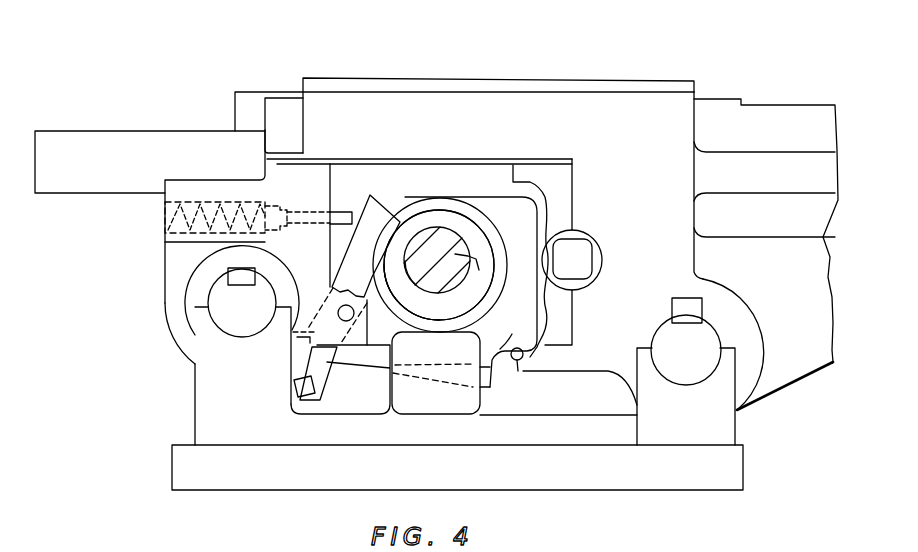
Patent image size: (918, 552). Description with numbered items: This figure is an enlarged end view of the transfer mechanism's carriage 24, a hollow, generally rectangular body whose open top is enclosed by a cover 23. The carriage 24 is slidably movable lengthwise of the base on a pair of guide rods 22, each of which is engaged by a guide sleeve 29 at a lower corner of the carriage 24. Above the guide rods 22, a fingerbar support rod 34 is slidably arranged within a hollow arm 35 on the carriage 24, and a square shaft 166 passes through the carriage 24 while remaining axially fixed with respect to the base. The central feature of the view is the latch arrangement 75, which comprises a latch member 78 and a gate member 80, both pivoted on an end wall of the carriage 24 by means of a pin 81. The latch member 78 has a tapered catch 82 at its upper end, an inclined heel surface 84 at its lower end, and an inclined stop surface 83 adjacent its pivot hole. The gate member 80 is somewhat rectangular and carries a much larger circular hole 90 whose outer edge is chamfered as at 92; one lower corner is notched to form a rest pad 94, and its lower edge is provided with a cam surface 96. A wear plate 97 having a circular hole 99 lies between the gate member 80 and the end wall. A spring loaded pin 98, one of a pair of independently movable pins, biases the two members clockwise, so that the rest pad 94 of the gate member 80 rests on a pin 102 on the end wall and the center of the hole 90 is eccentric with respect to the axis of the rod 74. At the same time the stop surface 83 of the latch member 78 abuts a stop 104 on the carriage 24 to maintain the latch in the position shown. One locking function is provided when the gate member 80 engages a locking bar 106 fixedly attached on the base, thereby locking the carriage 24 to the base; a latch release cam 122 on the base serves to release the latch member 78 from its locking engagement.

The guide rods 22 is at (237, 327).
The cover 23 is at (342, 80).
The carriage 24 is at (510, 78).
The guide sleeve 29 is at (183, 340).
The fingerbar support rod 34 is at (95, 142).
The hollow arm 35 is at (767, 110).
The rod 74 is at (440, 287).
The latch arrangement 75 is at (385, 179).
The latch member 78 is at (378, 214).
The gate member 80 is at (493, 200).
The pin 81 is at (344, 318).
The tapered catch 82 is at (383, 258).
The inclined stop surface 83 is at (310, 334).
The inclined heel surface 84 is at (293, 386).
The circular hole 90 is at (405, 315).
The chamfer 92 is at (444, 209).
The rest pad 94 is at (512, 334).
The cam surface 96 is at (378, 366).
The wear plate 97 is at (418, 220).
The spring loaded pin 98 is at (344, 212).
The circular hole 99 is at (478, 271).
The pin 102 is at (520, 360).
The stop 104 is at (328, 350).
The locking bar 106 is at (467, 403).
The latch release cam 122 is at (310, 405).
The square shaft 166 is at (580, 253).